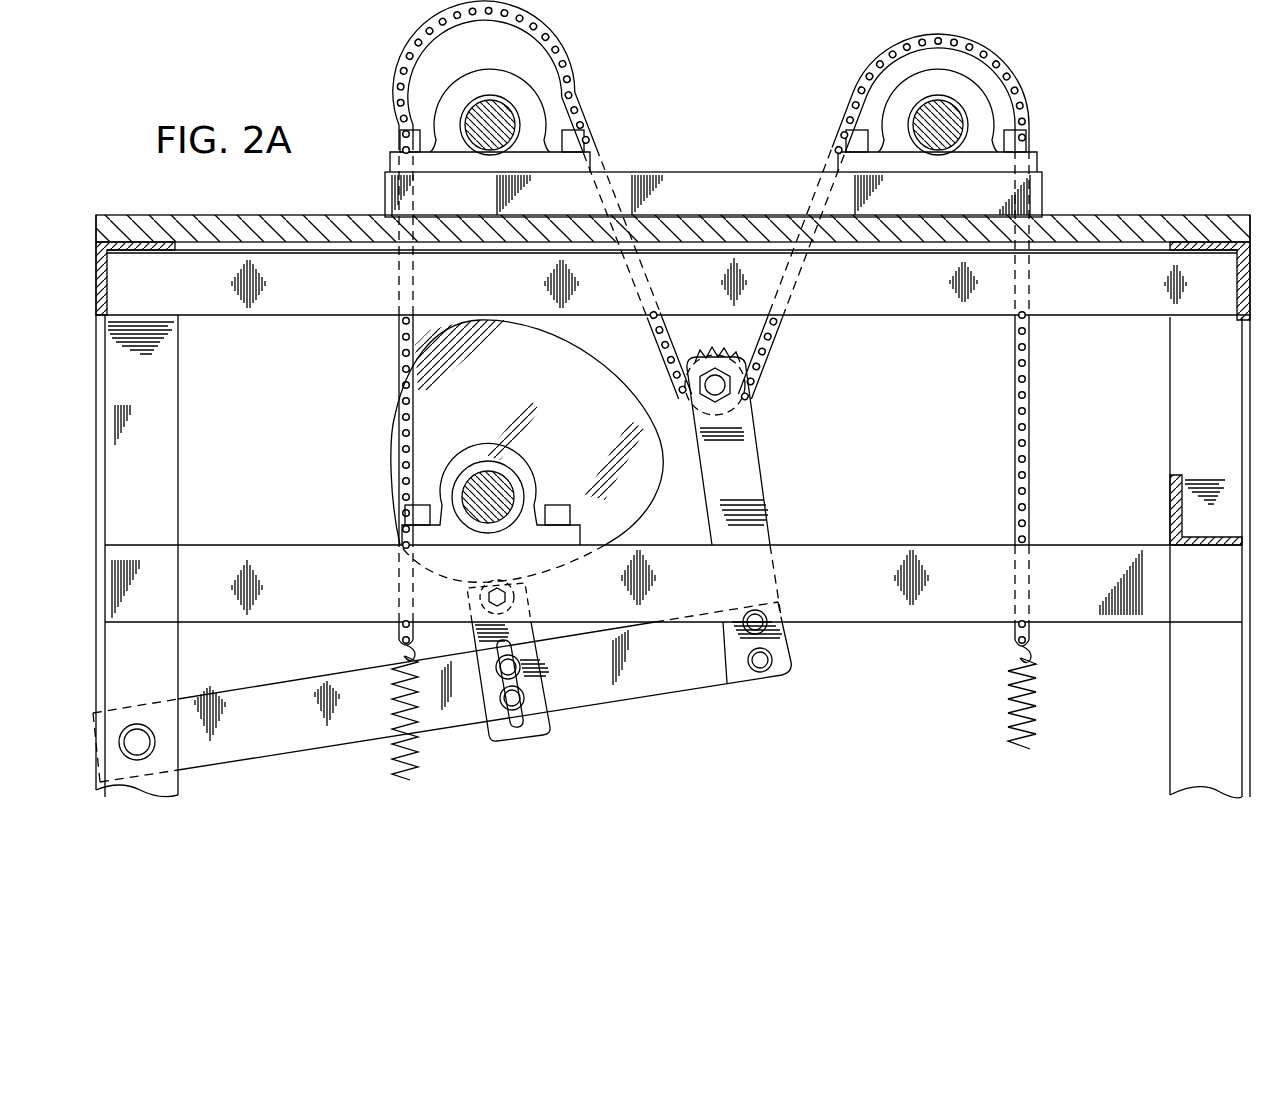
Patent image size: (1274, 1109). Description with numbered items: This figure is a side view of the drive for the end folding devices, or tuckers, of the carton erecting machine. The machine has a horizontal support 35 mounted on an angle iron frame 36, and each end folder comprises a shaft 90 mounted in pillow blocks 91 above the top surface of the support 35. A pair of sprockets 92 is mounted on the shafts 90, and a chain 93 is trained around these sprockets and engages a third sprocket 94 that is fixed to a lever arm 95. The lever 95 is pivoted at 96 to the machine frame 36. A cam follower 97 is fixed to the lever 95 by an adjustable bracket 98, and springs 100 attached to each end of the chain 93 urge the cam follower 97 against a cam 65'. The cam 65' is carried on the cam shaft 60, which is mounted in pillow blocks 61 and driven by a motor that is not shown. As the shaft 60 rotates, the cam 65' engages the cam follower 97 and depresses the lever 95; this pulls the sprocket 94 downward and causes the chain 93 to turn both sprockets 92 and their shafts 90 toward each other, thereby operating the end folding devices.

The horizontal support 35 is at (1158, 222).
The angle iron frame 36 is at (1137, 305).
The cam shaft 60 is at (506, 489).
The pillow blocks 61 is at (467, 468).
The cam 65' is at (527, 451).
The shaft 90 is at (492, 137).
The pillow blocks 91 is at (523, 110).
The sprockets 92 is at (531, 82).
The chain 93 is at (779, 340).
The third sprocket 94 is at (714, 355).
The lever arm 95 is at (633, 688).
The pivot 96 is at (140, 724).
The cam follower 97 is at (518, 592).
The adjustable bracket 98 is at (537, 723).
The springs 100 is at (415, 762).